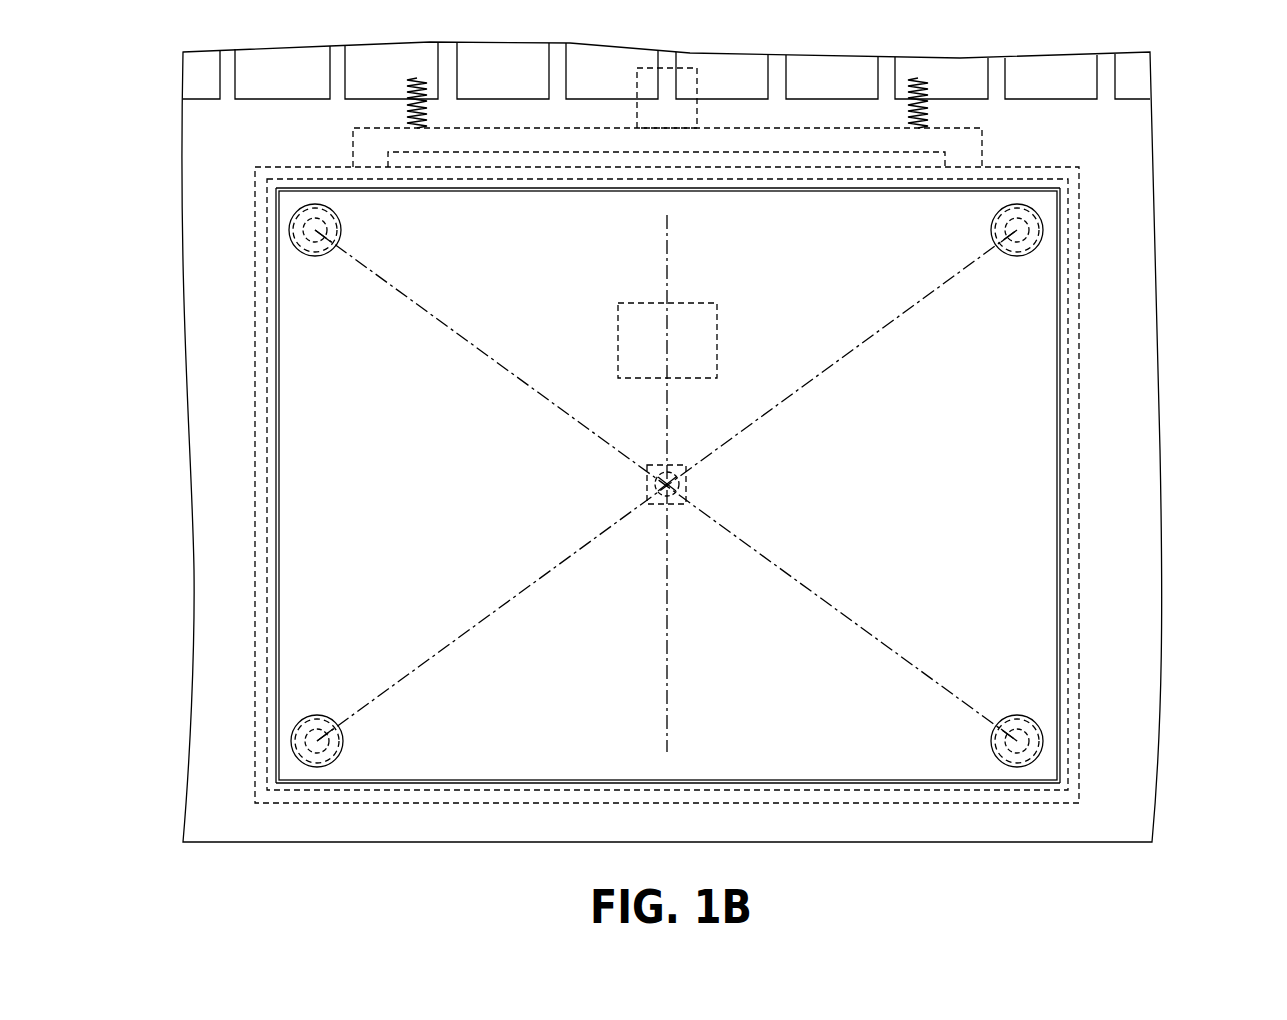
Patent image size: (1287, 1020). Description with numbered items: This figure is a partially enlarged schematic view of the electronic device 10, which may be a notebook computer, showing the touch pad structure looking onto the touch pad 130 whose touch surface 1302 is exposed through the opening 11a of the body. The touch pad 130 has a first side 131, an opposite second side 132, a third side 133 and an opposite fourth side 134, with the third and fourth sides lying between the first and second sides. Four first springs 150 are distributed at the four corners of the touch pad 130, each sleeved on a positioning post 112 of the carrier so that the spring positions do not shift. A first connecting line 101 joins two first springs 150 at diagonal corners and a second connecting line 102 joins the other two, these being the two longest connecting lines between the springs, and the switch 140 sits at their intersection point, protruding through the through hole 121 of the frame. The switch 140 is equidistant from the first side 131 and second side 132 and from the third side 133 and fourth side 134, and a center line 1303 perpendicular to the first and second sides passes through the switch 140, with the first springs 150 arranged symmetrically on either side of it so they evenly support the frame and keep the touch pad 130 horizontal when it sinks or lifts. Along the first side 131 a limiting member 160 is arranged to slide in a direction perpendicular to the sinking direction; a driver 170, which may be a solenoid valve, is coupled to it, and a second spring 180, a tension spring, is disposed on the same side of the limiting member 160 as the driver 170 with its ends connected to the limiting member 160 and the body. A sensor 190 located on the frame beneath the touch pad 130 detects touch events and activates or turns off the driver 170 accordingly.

The electronic device 10 is at (1283, 891).
The opening 11a is at (1060, 589).
The first connecting line 101 is at (898, 653).
The second connecting line 102 is at (448, 645).
The positioning post 112 is at (307, 223).
The through hole 121 is at (685, 490).
The touch pad 130 is at (968, 490).
The first side 131 is at (1010, 186).
The second side 132 is at (433, 786).
The third side 133 is at (274, 592).
The fourth side 134 is at (1060, 545).
The touch surface 1302 is at (1024, 442).
The center line 1303 is at (667, 707).
The switch 140 is at (688, 480).
The first spring 150 is at (297, 250).
The limiting member 160 is at (370, 160).
The driver 170 is at (688, 67).
The second spring 180 is at (412, 77).
The sensor 190 is at (717, 332).